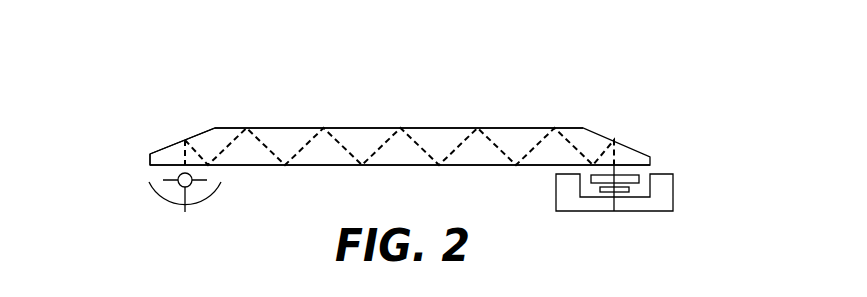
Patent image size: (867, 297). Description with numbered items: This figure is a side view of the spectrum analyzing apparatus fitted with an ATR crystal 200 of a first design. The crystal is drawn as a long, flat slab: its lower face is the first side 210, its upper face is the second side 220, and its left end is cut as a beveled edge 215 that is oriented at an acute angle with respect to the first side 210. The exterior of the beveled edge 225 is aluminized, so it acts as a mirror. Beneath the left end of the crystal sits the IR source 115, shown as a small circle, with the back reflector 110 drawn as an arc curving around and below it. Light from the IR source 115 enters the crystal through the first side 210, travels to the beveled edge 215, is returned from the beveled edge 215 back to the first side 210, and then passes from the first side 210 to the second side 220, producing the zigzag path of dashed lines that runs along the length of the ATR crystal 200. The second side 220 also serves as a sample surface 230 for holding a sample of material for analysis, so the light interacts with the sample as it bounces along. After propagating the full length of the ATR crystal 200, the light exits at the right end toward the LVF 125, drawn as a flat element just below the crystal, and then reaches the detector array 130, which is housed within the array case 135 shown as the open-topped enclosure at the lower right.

The ATR crystal 200 is at (519, 111).
The first side 210 is at (158, 166).
The beveled edge 215 is at (158, 147).
The second side 220 is at (260, 128).
The beveled edge 225 is at (196, 128).
The sample surface 230 is at (350, 122).
The back reflector 110 is at (168, 205).
The IR source 115 is at (185, 212).
The LVF 125 is at (639, 179).
The detector array 130 is at (614, 211).
The array case 135 is at (567, 211).